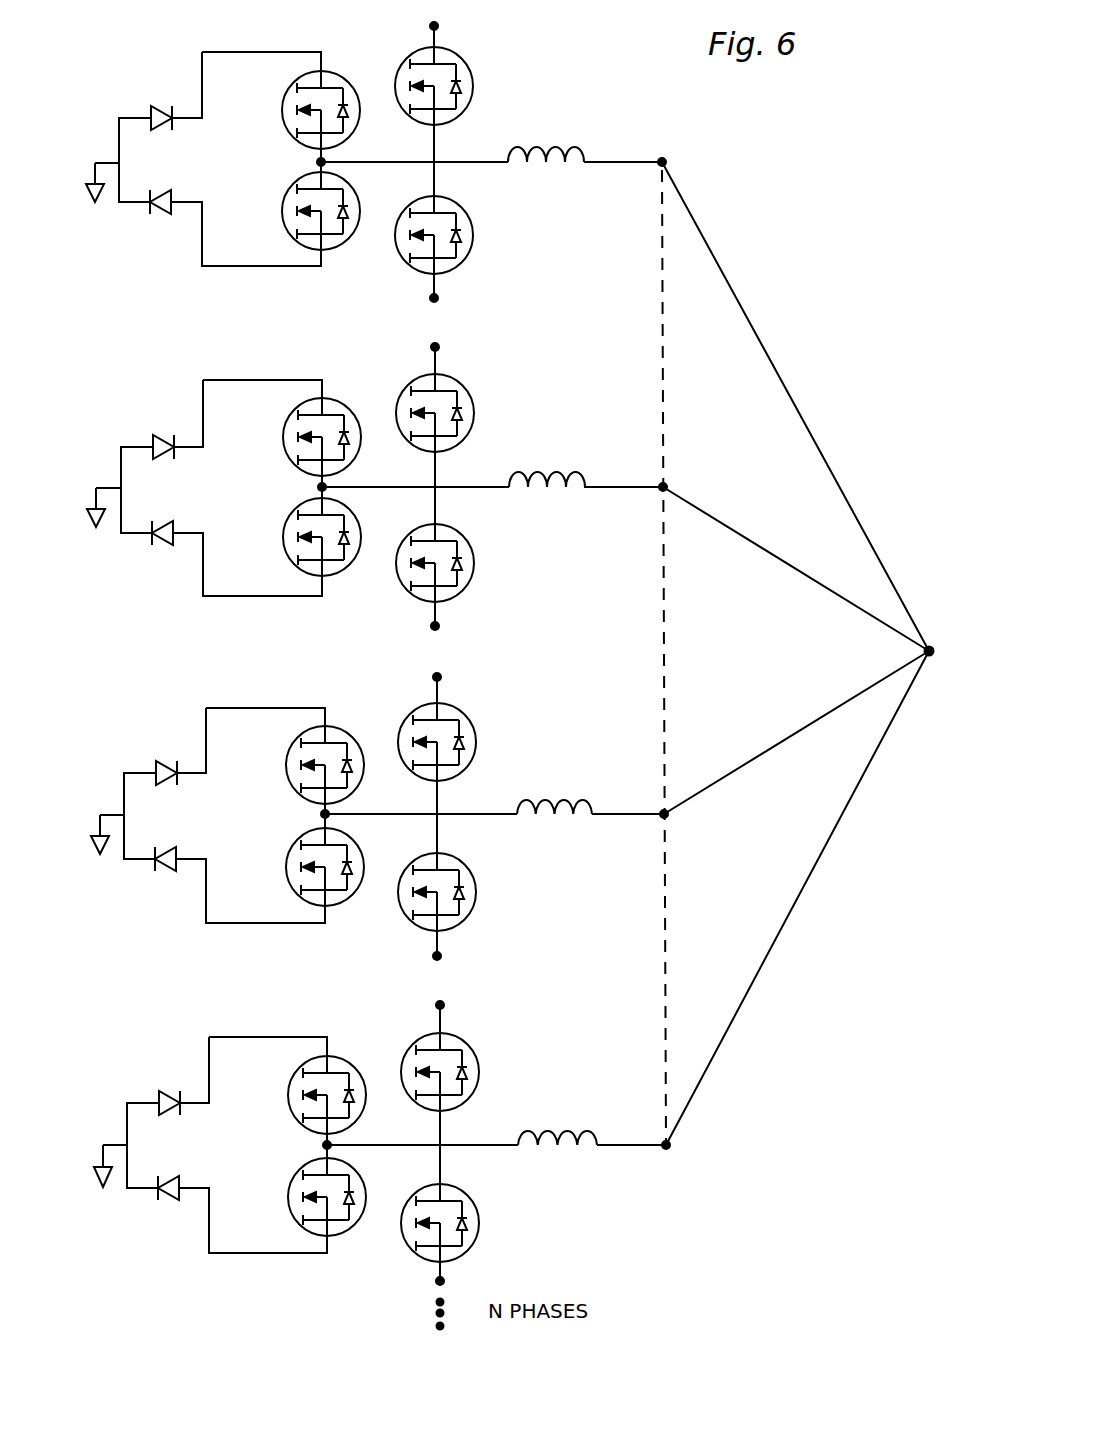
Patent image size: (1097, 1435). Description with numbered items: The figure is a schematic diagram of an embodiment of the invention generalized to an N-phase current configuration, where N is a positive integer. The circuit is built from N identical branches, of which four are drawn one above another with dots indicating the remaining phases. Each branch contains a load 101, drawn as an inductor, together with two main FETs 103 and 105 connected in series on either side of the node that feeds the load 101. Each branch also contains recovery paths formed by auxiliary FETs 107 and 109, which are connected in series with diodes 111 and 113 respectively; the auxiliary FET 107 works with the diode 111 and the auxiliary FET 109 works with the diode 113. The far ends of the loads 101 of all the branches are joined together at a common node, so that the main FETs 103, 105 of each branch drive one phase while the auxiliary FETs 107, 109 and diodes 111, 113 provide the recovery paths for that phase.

The load 101 is at (542, 146).
The main FET 103 is at (467, 232).
The main FET 105 is at (467, 86).
The auxiliary FET 107 is at (284, 117).
The auxiliary FET 109 is at (290, 228).
The diode 111 is at (162, 106).
The diode 113 is at (166, 214).